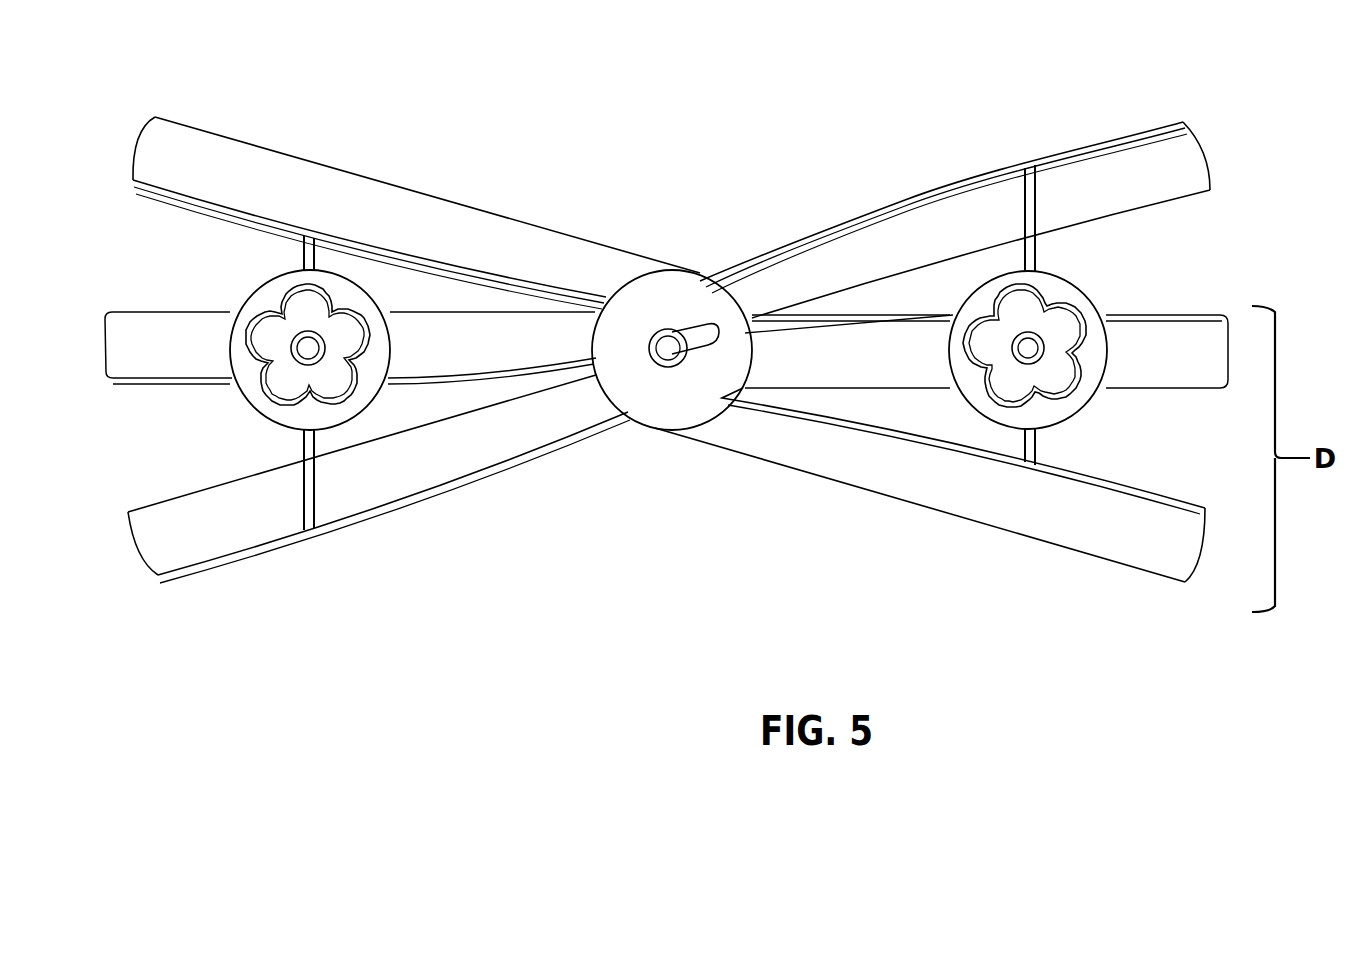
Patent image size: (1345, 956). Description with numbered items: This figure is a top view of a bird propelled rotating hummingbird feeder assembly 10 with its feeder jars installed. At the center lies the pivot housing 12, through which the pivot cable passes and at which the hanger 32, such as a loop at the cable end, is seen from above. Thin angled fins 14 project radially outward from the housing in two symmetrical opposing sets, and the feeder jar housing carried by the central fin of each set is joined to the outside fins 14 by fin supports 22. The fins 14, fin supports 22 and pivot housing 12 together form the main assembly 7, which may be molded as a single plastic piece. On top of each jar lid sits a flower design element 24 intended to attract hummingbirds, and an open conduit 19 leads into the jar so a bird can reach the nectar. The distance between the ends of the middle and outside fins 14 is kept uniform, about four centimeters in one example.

The main assembly 7 is at (266, 126).
The bird propelled rotating hummingbird feeder assembly 10 is at (575, 160).
The pivot housing 12 is at (641, 307).
The fins 14 is at (905, 197).
The open conduit 19 is at (308, 352).
The fin supports 22 is at (317, 478).
The flower design element 24 is at (1072, 325).
The hanger 32 is at (699, 335).